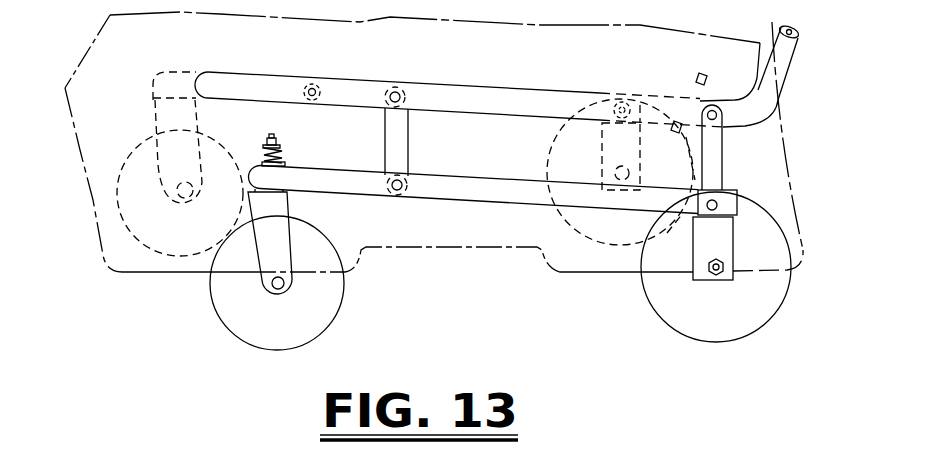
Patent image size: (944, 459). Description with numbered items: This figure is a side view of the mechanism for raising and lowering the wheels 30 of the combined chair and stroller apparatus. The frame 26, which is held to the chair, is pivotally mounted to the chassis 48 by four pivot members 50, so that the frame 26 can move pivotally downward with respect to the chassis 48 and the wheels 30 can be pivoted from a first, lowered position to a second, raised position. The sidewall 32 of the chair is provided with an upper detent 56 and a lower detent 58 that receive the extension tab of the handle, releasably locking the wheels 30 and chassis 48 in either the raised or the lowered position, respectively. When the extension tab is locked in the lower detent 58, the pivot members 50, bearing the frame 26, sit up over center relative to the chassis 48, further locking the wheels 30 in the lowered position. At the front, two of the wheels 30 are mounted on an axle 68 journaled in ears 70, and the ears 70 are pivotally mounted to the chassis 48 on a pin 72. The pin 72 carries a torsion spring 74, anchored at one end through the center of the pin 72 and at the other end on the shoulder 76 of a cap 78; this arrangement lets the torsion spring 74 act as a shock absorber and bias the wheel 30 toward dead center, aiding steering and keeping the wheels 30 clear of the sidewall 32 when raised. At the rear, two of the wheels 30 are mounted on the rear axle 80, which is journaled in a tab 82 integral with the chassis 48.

The frame 26 is at (475, 86).
The wheels 30 is at (289, 332).
The sidewall 32 is at (373, 52).
The chassis 48 is at (496, 180).
The pivot members 50 is at (408, 137).
The upper detent 56 is at (700, 74).
The lower detent 58 is at (676, 132).
The axle 68 is at (285, 285).
The ears 70 is at (277, 234).
The pin 72 is at (273, 138).
The torsion spring 74 is at (283, 154).
The shoulder 76 is at (286, 163).
The cap 78 is at (268, 139).
The rear axle 80 is at (722, 271).
The tab 82 is at (729, 243).